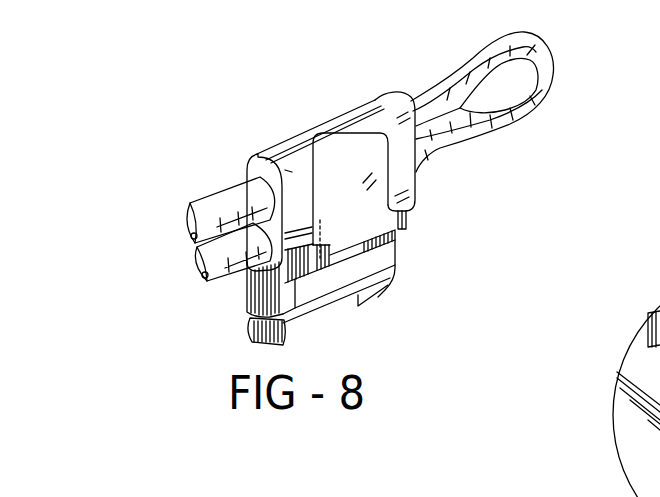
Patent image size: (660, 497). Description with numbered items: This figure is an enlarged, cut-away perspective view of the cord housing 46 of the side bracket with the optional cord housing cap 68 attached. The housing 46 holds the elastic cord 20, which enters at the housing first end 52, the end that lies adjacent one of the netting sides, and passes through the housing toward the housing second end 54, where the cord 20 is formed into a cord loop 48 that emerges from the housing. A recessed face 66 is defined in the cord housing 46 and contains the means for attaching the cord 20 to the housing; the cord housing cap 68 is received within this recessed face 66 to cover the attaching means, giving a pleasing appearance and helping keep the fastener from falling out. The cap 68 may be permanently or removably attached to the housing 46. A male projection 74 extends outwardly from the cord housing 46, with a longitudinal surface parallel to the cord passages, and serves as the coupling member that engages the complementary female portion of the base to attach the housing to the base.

The elastic cord 20 is at (206, 197).
The cord housing 46 is at (302, 132).
The cord loop 48 is at (553, 65).
The housing first end 52 is at (256, 158).
The housing second end 54 is at (425, 167).
The recessed face 66 is at (340, 140).
The cord housing cap 68 is at (362, 217).
The male projection 74 is at (307, 327).